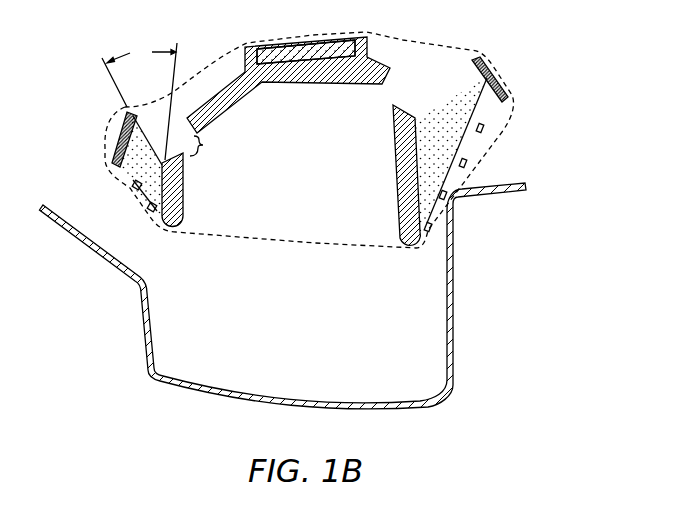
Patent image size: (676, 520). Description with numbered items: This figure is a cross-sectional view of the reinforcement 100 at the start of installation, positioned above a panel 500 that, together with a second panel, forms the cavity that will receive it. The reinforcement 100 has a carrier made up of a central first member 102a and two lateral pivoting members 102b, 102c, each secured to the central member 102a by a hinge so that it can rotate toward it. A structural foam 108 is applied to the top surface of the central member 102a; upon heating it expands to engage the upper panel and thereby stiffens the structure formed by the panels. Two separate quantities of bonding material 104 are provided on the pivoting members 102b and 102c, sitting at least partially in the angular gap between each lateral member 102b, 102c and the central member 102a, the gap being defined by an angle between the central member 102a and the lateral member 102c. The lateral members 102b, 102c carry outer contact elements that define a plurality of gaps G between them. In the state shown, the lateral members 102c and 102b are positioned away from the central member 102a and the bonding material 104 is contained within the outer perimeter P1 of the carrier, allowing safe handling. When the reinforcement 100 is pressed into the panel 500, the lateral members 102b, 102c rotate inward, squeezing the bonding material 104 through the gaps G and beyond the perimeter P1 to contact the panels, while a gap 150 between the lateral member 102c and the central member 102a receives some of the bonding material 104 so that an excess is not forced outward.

The reinforcement 100 is at (312, 139).
The first member 102a is at (229, 113).
The lateral pivoting member 102b is at (510, 101).
The lateral pivoting member 102c is at (119, 137).
The bonding material 104 is at (137, 208).
The structural foam 108 is at (290, 48).
The gap 150 is at (212, 152).
The panel 500 is at (454, 322).
The outer perimeter P1 is at (478, 50).
The gaps G is at (126, 196).